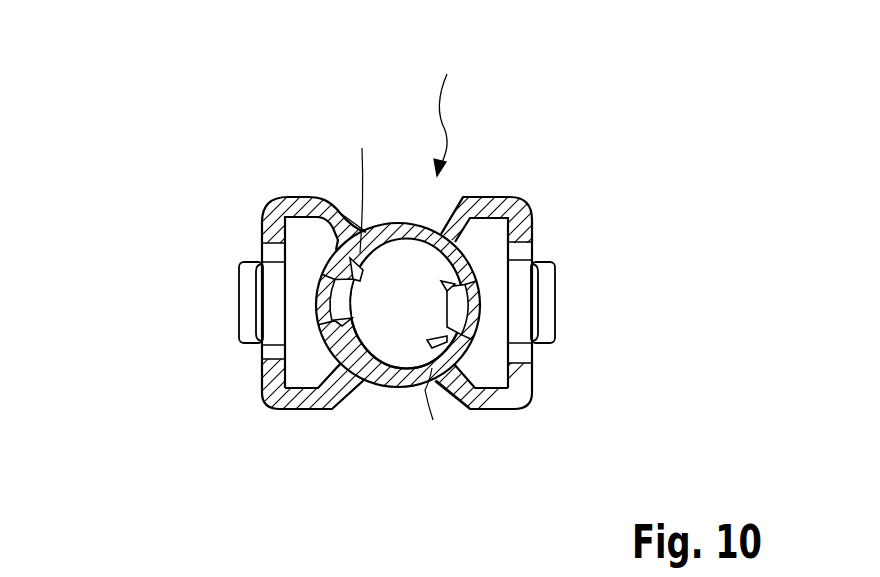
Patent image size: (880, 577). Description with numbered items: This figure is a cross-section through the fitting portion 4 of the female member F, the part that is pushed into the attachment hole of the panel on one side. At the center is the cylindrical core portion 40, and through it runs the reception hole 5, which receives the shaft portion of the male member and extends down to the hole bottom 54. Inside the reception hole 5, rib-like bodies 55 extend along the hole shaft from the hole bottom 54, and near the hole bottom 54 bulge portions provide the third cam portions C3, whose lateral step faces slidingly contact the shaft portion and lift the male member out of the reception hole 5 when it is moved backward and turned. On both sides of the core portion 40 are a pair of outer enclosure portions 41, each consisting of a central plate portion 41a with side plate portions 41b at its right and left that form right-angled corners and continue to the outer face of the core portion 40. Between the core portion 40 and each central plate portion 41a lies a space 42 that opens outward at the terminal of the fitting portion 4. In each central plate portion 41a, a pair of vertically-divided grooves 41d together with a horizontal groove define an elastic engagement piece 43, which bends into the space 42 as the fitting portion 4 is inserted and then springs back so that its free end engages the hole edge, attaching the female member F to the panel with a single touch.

The fitting portion 4 is at (440, 288).
The reception hole 5 is at (391, 258).
The core portion 40 is at (410, 372).
The outer enclosure portion 41 is at (263, 373).
The central plate portion 41a is at (263, 219).
The side plate portion 41b is at (328, 207).
The vertically-divided groove 41d is at (273, 250).
The space 42 is at (310, 237).
The elastic engagement piece 43 is at (241, 304).
The hole bottom 54 is at (380, 326).
The rib-like body 55 is at (462, 288).
The third cam portion C3 is at (398, 288).
The female member F is at (451, 113).